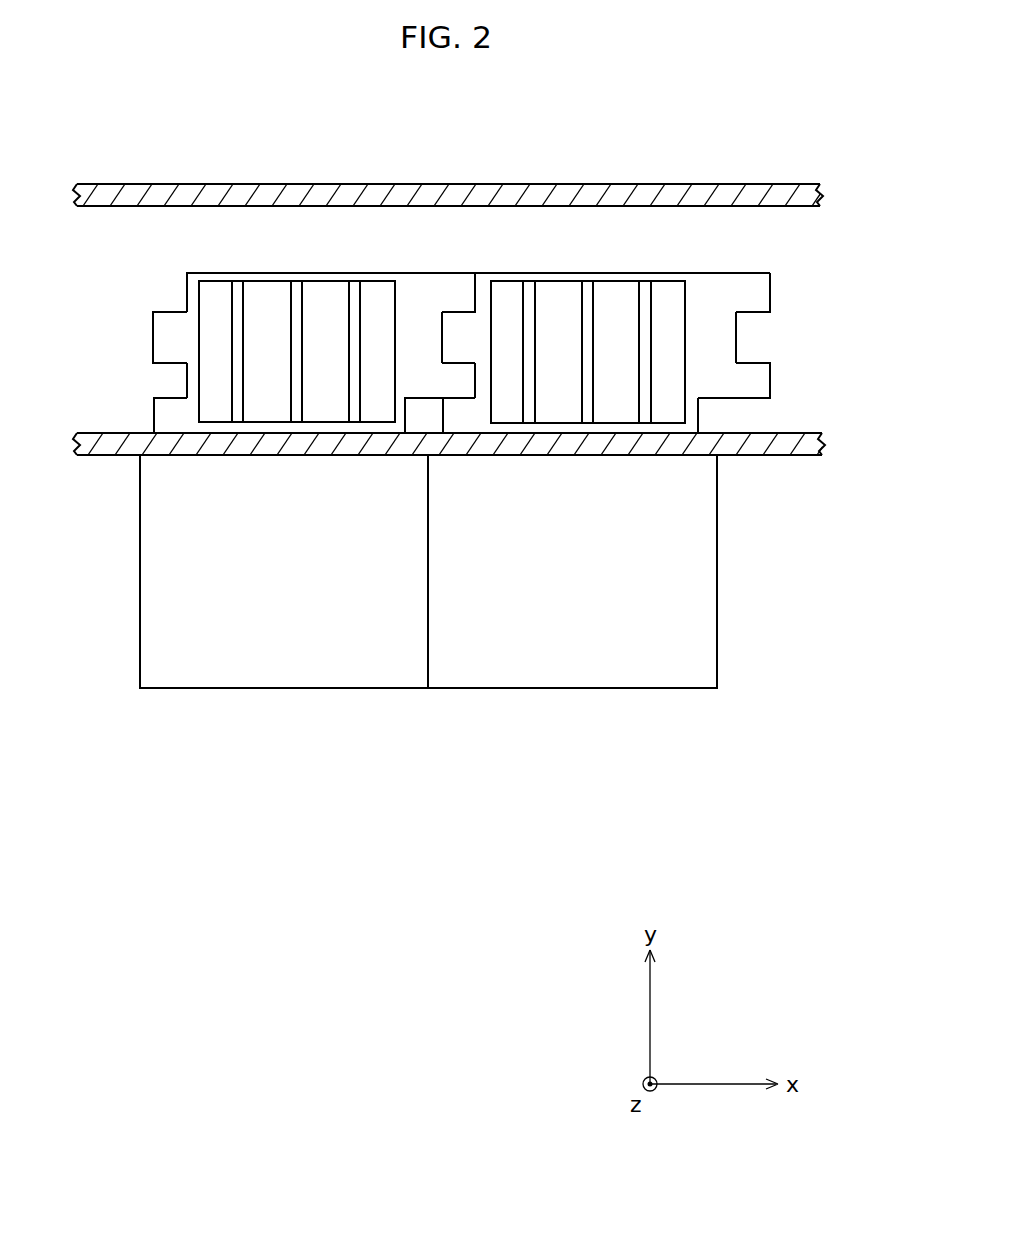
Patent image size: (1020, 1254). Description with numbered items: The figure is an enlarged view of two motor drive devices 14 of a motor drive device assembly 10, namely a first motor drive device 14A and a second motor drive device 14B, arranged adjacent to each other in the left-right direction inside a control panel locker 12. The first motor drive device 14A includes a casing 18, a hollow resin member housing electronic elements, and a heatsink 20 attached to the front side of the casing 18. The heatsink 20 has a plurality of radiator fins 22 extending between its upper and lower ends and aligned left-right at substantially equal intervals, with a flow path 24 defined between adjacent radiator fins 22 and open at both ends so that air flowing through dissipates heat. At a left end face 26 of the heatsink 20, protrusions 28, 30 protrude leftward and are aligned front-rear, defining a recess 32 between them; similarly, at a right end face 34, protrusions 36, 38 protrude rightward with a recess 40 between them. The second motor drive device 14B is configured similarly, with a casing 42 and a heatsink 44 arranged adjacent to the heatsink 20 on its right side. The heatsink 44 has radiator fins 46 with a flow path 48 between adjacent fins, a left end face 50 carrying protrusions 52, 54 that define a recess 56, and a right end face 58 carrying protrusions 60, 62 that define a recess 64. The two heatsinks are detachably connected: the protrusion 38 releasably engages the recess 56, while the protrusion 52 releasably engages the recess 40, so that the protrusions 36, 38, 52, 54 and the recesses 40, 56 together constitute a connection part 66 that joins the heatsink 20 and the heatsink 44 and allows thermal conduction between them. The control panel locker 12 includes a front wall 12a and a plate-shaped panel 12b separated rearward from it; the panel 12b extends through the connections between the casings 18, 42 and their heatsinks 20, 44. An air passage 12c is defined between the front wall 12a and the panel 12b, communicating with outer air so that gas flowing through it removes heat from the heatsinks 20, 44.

The motor drive device assembly 10 is at (291, 797).
The control panel locker 12 is at (770, 184).
The front wall 12a is at (607, 192).
The panel 12b is at (760, 445).
The air passage 12c is at (689, 243).
The motor drive devices 14 is at (513, 787).
The first motor drive device 14A is at (313, 700).
The second motor drive device 14B is at (545, 700).
The casing 18 is at (175, 620).
The heatsink 20 is at (234, 269).
The radiator fins 22 is at (237, 307).
The flow path 24 is at (383, 410).
The left end face 26 is at (186, 296).
The protrusion 28 is at (163, 333).
The protrusion 30 is at (159, 420).
The recess 32 is at (185, 379).
The right end face 34 is at (413, 413).
The protrusion 36 is at (448, 302).
The protrusion 38 is at (463, 391).
The recess 40 is at (444, 342).
The casing 42 is at (678, 636).
The heatsink 44 is at (698, 268).
The radiator fins 46 is at (531, 303).
The flow path 48 is at (474, 372).
The left end face 50 is at (472, 287).
The protrusion 52 is at (457, 341).
The protrusion 54 is at (450, 415).
The recess 56 is at (505, 405).
The right end face 58 is at (698, 418).
The protrusion 60 is at (750, 288).
The protrusion 62 is at (763, 382).
The recess 64 is at (738, 335).
The connection part 66 is at (447, 256).